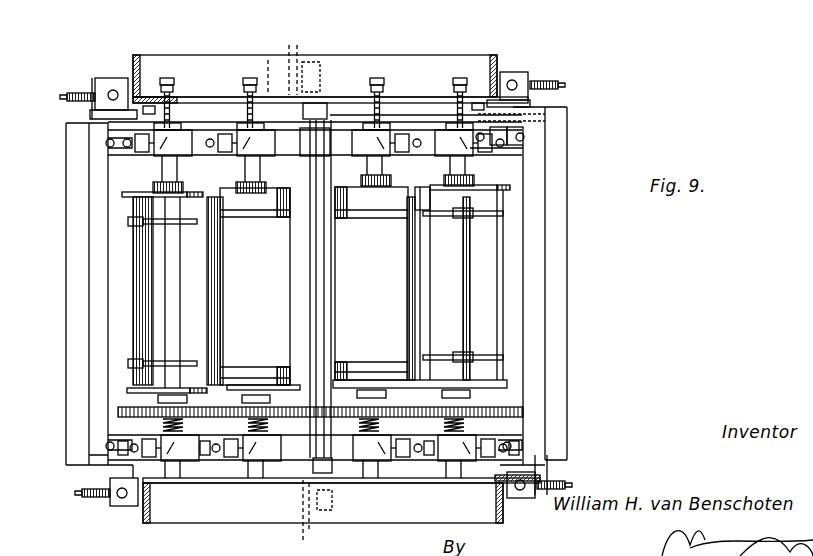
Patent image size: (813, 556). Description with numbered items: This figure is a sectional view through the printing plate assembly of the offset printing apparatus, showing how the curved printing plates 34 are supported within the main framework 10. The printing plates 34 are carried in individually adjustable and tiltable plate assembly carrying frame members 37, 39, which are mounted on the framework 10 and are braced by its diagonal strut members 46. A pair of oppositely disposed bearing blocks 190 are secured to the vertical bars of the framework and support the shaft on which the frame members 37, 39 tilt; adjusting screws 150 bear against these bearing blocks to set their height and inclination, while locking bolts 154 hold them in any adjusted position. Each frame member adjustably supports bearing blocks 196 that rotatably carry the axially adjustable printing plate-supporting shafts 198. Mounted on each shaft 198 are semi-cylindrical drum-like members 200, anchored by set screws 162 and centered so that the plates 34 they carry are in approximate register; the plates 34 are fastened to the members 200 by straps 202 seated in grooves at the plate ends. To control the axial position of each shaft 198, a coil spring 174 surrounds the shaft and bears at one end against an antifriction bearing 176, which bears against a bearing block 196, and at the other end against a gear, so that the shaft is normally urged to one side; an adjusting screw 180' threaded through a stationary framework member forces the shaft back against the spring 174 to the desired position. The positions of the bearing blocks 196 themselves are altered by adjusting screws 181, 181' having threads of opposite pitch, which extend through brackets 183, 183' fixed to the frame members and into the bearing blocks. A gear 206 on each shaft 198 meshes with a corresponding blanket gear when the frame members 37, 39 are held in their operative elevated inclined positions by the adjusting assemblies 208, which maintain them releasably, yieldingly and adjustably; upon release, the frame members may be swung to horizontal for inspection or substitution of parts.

The main framework 10 is at (433, 61).
The curved printing plates 34 is at (212, 312).
The plate assembly carrying frame member 37 is at (570, 241).
The plate assembly carrying frame member 39 is at (66, 194).
The diagonal strut members 46 is at (288, 56).
The adjusting screws 150 is at (321, 77).
The locking bolts 154 is at (290, 70).
The set screws 162 is at (378, 119).
The coil spring 174 is at (163, 428).
The antifriction bearing 176 is at (408, 427).
The adjusting screw 180' is at (313, 100).
The adjusting screws 181 is at (322, 301).
The adjusting screws 181' is at (566, 127).
The brackets 183 is at (322, 290).
The brackets 183' is at (546, 122).
The bearing blocks 190 is at (304, 60).
The bearing blocks 196 is at (178, 150).
The printing plate-supporting shafts 198 is at (177, 183).
The drum-like members 200 is at (133, 265).
The straps 202 is at (128, 220).
The gear 206 is at (118, 412).
The adjusting assemblies 208 is at (68, 97).